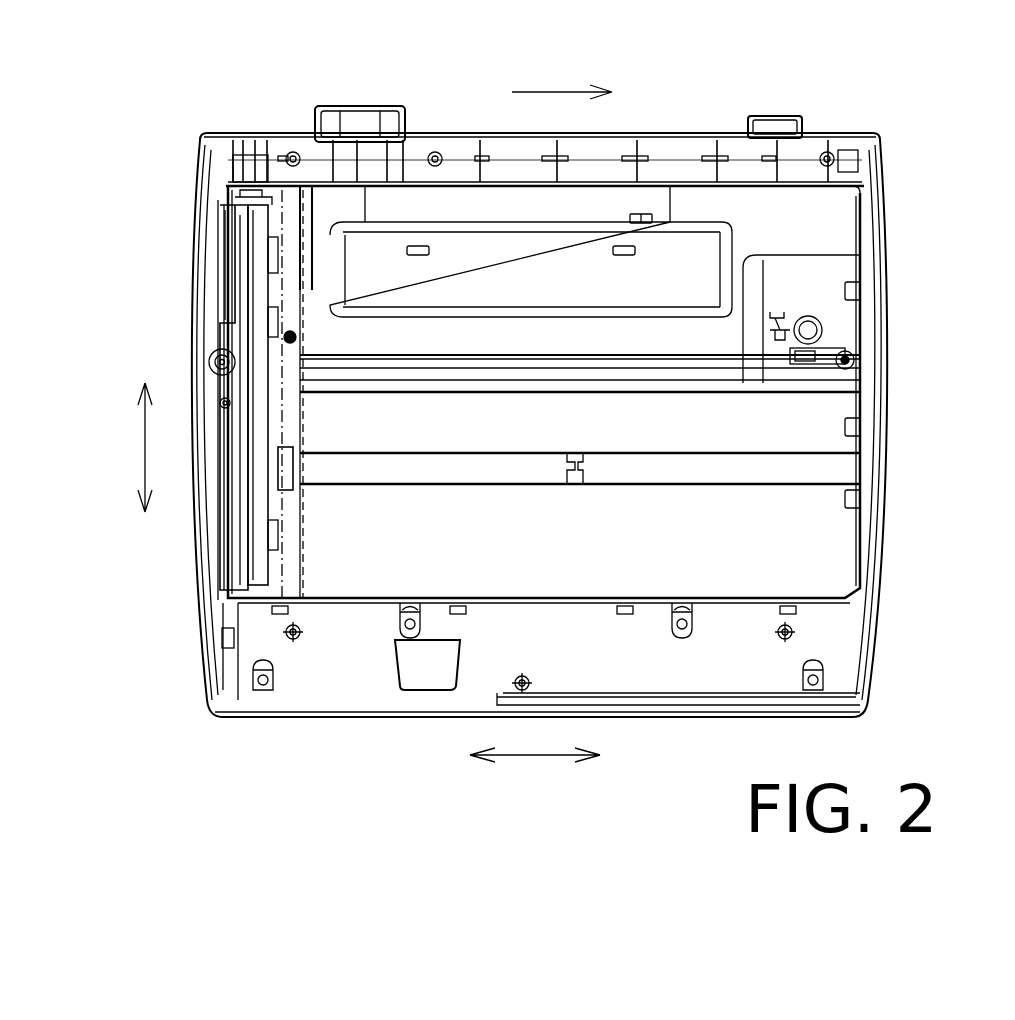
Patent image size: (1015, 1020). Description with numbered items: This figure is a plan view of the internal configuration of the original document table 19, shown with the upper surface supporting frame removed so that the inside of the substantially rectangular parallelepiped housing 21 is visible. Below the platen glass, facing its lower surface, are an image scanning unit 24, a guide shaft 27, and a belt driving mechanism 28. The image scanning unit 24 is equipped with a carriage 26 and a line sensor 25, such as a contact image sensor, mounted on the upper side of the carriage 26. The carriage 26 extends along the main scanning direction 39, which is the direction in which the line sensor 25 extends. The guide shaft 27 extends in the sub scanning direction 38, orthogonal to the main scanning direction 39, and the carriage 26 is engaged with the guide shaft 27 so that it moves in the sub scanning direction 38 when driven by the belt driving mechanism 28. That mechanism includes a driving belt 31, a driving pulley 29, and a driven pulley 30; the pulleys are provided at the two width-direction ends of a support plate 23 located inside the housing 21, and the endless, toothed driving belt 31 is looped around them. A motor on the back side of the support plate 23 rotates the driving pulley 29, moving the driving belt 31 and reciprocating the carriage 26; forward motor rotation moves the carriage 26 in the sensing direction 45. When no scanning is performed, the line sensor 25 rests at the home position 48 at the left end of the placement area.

The original document table 19 is at (557, 411).
The housing 21 is at (539, 411).
The support plate 23 is at (562, 542).
The image scanning unit 24 is at (312, 349).
The line sensor 25 is at (262, 436).
The carriage 26 is at (280, 550).
The guide shaft 27 is at (505, 395).
The belt driving mechanism 28 is at (210, 325).
The driving pulley 29 is at (208, 357).
The driven pulley 30 is at (855, 362).
The driving belt 31 is at (600, 355).
The sub scanning direction 38 is at (530, 760).
The main scanning direction 39 is at (145, 447).
The sensing direction 45 is at (553, 92).
The home position 48 is at (305, 505).